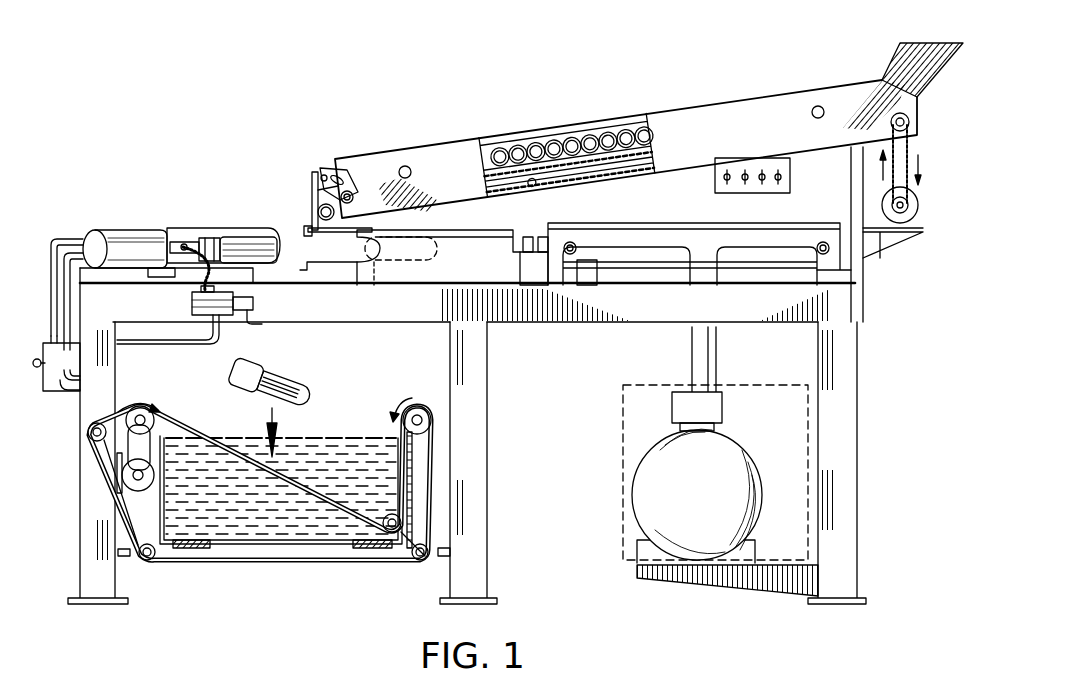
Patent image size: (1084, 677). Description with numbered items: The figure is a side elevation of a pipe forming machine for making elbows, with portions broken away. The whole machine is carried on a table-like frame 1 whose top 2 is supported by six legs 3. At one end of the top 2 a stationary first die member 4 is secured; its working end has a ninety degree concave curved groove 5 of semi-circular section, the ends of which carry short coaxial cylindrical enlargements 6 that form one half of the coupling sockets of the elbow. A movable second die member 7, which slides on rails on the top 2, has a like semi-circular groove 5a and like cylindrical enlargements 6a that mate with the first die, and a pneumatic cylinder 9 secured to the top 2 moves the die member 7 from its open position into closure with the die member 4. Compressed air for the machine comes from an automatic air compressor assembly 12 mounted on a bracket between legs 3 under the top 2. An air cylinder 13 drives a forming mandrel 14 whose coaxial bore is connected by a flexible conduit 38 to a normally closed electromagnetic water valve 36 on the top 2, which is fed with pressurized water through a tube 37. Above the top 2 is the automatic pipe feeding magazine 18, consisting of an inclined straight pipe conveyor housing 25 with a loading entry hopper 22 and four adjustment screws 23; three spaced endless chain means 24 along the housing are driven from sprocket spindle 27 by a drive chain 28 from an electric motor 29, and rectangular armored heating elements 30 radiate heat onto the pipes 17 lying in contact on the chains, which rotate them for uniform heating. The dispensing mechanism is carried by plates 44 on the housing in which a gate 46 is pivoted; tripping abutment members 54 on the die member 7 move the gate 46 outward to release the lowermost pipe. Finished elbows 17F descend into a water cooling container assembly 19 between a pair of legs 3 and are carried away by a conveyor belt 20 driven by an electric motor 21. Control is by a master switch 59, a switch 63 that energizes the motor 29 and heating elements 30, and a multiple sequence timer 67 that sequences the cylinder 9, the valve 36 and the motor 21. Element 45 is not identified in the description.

The table-like frame 1 is at (530, 372).
The top 2 is at (470, 319).
The legs 3 is at (84, 481).
The stationary first die member 4 is at (268, 230).
The concave curved groove 5 is at (232, 206).
The semi-circular groove 5a is at (437, 248).
The cylindrical enlargements 6 is at (192, 205).
The cylindrical enlargements 6a is at (377, 288).
The movable forming second die member 7 is at (415, 230).
The pneumatic cylinder 9 is at (640, 228).
The automatic air compressor assembly 12 is at (622, 448).
The air cylinder 13 is at (113, 228).
The mandrel 14 is at (187, 240).
The pipes 17 is at (518, 146).
The finished elbows 17F is at (293, 375).
The automatic pipe feeding magazine 18 is at (278, 150).
The water cooling container assembly 19 is at (228, 584).
The conveyor belt 20 is at (173, 432).
The electric motor 21 is at (135, 497).
The entry hopper 22 is at (915, 43).
The adjustment screws 23 is at (411, 172).
The endless chain means 24 is at (533, 186).
The straight pipe conveyor housing 25 is at (442, 152).
The sprocket spindle 27 is at (908, 118).
The drive chain 28 is at (908, 148).
The electric motor 29 is at (918, 203).
The armored heating elements 30 is at (558, 133).
The electro-magnetic water valve 36 is at (192, 304).
The water tube 37 is at (266, 322).
The flexible conduit 38 is at (207, 273).
The plates 44 is at (332, 168).
The plate 45 is at (310, 233).
The gate 46 is at (312, 186).
The tripping abutment members 54 is at (327, 232).
The master switch 59 is at (37, 372).
The switch 63 is at (730, 184).
The multiple sequence timer 67 is at (775, 366).